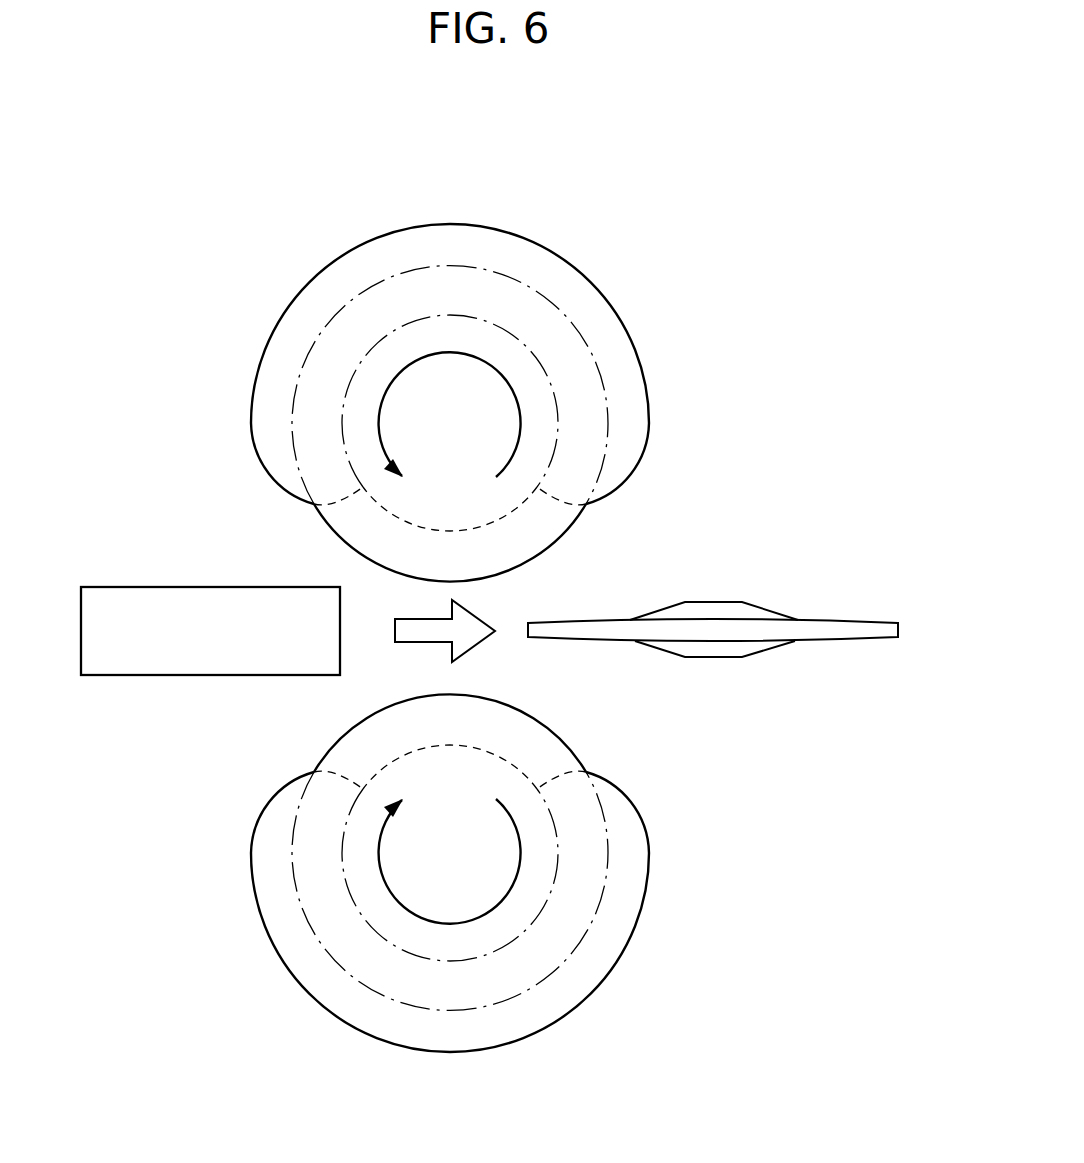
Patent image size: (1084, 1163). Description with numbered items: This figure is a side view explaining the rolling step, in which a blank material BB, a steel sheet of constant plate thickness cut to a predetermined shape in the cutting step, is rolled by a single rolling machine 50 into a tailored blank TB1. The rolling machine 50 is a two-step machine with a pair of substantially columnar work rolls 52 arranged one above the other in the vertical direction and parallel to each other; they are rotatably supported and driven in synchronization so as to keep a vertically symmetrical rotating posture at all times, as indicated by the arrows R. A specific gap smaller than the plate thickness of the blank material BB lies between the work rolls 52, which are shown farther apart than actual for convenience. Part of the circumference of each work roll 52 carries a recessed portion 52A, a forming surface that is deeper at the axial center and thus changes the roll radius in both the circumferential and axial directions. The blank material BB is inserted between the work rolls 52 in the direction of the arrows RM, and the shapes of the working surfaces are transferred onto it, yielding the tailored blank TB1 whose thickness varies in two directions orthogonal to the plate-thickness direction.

The rolling machine 50 is at (513, 180).
The work roll 52 is at (388, 234).
The recessed portion 52A is at (577, 541).
The arrows R is at (447, 354).
The blank material BB is at (158, 586).
The arrows RM is at (413, 618).
The tailored blank TB1 is at (819, 620).